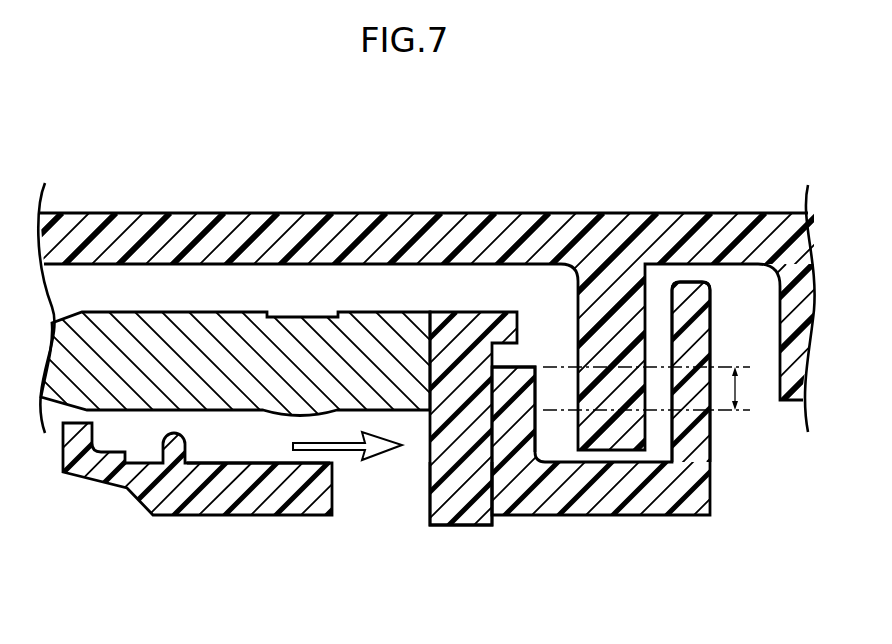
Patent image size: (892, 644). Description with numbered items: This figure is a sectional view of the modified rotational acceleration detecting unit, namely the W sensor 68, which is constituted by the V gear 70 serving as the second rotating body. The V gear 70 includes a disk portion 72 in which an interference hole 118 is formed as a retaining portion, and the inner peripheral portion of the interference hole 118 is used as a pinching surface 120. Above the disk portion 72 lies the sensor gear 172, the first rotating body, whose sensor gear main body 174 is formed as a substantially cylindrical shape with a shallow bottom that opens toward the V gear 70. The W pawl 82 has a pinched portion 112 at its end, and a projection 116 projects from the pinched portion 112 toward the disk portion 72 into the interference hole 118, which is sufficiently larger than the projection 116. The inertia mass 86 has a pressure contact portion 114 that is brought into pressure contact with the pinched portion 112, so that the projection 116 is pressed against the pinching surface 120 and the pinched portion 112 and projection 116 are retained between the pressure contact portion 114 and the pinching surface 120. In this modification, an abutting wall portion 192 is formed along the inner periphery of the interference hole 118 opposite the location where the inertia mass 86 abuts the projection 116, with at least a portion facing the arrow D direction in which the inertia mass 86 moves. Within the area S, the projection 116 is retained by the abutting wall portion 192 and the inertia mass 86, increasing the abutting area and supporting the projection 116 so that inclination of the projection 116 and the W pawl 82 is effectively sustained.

The sensor gear main body 174 is at (446, 307).
The sensor gear 172 is at (467, 213).
The pressure contact portion 114 is at (268, 348).
The inertia mass 86 is at (204, 312).
The pinched portion 112 is at (464, 399).
The W pawl 82 is at (472, 312).
The pinching surface 120 is at (480, 462).
The interference hole 118 is at (333, 488).
The disk portion 72 is at (237, 463).
The arrow D direction D is at (333, 452).
The V gear 70 is at (615, 437).
The W sensor 68 is at (575, 517).
The projection 116 is at (495, 483).
The abutting wall portion 192 is at (537, 418).
The area S is at (742, 387).